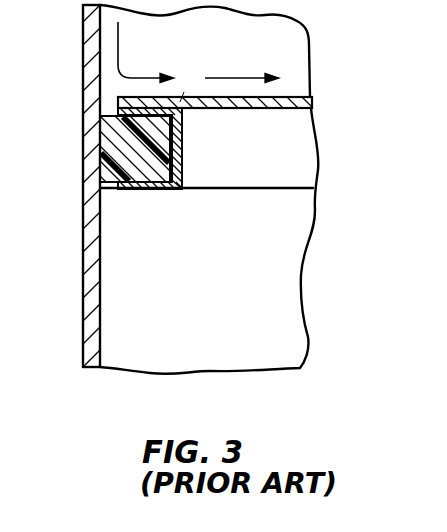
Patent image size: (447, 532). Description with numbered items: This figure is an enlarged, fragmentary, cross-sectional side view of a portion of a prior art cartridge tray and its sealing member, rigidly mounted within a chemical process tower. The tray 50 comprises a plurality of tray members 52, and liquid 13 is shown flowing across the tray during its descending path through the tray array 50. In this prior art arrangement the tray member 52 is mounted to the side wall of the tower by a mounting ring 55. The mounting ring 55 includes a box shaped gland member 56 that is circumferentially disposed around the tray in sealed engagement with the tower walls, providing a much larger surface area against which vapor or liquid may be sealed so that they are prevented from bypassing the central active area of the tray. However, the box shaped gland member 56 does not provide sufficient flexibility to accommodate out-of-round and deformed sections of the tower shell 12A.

The tower shell 12A is at (84, 287).
The liquid 13 is at (118, 58).
The tray 50 is at (180, 97).
The tray member 52 is at (268, 108).
The mounting ring 55 is at (128, 160).
The box shaped gland member 56 is at (125, 145).